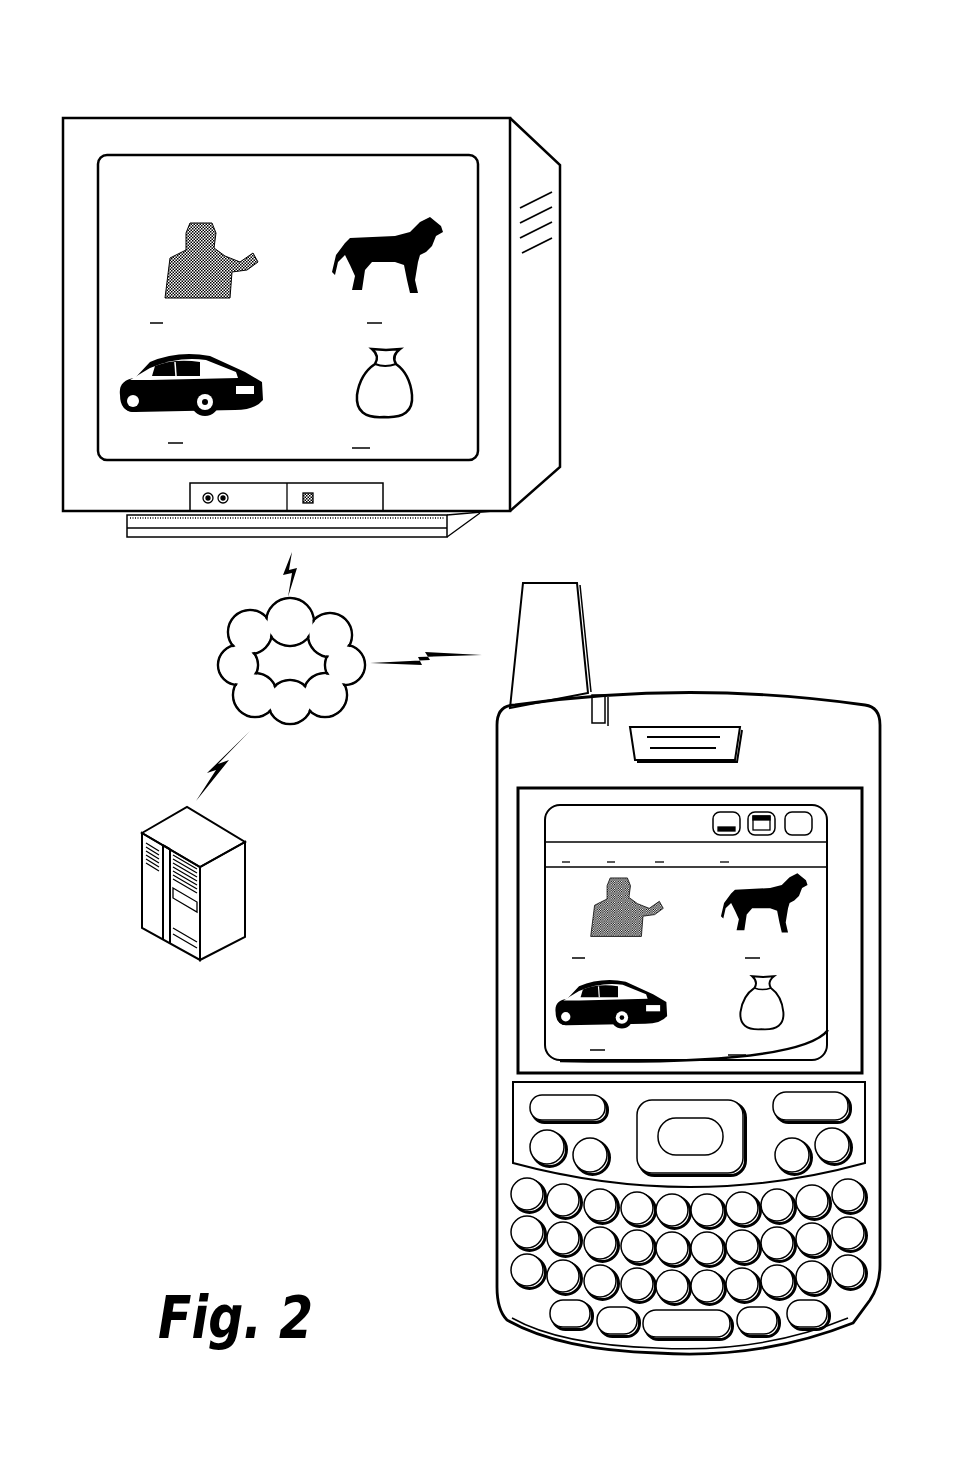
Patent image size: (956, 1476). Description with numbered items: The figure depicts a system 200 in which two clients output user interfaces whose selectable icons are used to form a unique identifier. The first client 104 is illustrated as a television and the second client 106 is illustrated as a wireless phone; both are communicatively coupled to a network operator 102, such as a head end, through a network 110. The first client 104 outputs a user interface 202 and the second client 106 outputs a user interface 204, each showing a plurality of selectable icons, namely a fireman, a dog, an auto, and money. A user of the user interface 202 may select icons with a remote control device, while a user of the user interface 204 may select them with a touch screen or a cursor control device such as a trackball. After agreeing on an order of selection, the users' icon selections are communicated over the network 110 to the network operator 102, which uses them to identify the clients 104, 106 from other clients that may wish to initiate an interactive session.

The system 200 is at (204, 78).
The first client 104 is at (510, 118).
The user interface 202 is at (313, 162).
The network 110 is at (308, 688).
The network operator 102 is at (245, 842).
The second client 106 is at (688, 687).
The user interface 204 is at (545, 932).